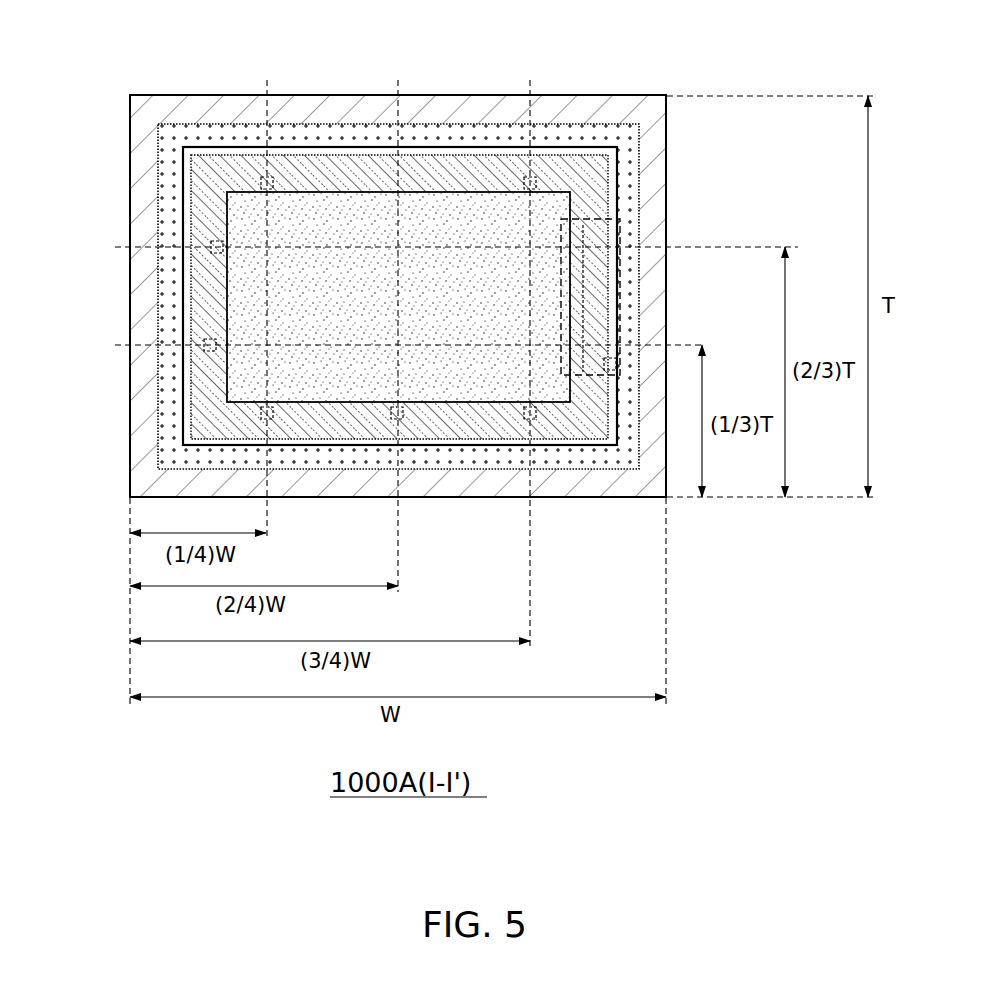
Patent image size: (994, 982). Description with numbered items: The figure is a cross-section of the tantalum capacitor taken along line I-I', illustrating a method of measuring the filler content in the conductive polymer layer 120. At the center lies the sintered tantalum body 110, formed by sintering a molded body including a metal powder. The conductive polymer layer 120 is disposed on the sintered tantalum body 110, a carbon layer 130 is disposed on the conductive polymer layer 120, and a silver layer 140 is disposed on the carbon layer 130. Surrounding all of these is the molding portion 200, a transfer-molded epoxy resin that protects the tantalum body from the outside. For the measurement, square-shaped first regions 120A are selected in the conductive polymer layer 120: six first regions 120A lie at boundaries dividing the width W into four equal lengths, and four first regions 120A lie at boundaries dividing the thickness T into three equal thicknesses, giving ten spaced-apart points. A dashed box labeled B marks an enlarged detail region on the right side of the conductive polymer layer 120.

The sintered tantalum body 110 is at (244, 205).
The conductive polymer layer 120 is at (312, 175).
The first regions 120A is at (528, 178).
The carbon layer 130 is at (375, 152).
The silver layer 140 is at (440, 135).
The molding portion 200 is at (568, 108).
The region B is at (620, 222).